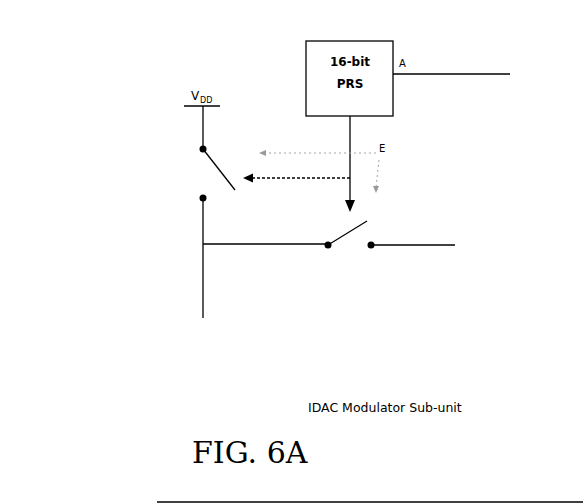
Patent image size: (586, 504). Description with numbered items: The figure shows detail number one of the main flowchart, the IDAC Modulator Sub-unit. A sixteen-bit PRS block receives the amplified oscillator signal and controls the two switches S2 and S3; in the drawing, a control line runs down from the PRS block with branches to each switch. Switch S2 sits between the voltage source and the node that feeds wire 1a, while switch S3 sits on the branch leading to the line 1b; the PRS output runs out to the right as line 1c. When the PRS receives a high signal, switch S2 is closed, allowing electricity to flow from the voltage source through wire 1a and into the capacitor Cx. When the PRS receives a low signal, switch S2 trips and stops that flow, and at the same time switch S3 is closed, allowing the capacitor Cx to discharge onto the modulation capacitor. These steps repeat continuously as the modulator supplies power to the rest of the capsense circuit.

The wire 1a is at (262, 271).
The input terminal via switch S3 1b is at (428, 245).
The PRS output A terminal 1c is at (463, 74).
The switch S2 is at (199, 174).
The switch S3 is at (355, 252).